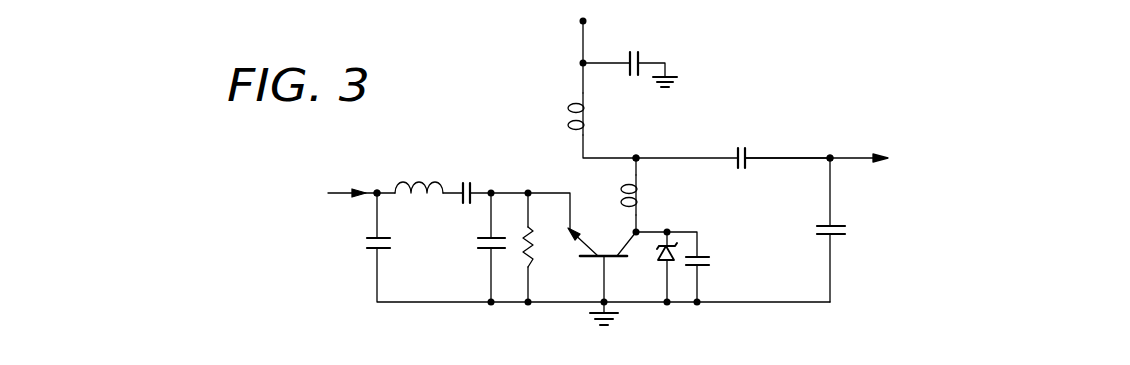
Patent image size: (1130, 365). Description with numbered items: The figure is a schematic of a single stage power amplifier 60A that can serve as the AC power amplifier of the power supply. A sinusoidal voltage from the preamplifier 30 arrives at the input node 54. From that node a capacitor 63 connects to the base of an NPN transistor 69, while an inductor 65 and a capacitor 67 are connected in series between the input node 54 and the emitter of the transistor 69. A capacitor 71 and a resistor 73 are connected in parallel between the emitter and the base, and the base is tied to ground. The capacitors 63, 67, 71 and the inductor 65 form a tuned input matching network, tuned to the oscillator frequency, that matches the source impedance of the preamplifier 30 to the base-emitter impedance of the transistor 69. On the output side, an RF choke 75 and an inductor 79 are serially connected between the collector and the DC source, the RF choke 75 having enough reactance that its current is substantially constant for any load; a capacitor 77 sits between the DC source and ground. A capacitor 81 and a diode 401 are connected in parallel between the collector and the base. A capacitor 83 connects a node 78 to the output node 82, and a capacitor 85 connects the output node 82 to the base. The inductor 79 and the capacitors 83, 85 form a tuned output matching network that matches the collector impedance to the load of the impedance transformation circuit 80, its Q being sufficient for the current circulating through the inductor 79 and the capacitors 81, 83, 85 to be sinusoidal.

The single stage power amplifier 60A is at (781, 85).
The preamplifier 30 is at (252, 194).
The impedance transformation circuit 80 is at (972, 156).
The input node 54 is at (378, 189).
The inductor 65 is at (436, 181).
The capacitor 67 is at (471, 189).
The capacitor 63 is at (384, 237).
The capacitor 71 is at (478, 250).
The resistor 73 is at (530, 246).
The NPN transistor 69 is at (613, 257).
The inductor 79 is at (643, 195).
The diode 401 is at (672, 247).
The capacitor 81 is at (705, 265).
The RF choke 75 is at (590, 115).
The capacitor 77 is at (640, 62).
The node 78 is at (638, 156).
The capacitor 83 is at (746, 156).
The output node 82 is at (807, 160).
The capacitor 85 is at (838, 236).